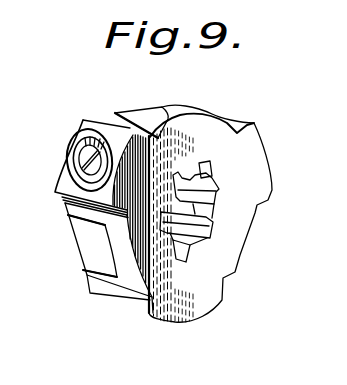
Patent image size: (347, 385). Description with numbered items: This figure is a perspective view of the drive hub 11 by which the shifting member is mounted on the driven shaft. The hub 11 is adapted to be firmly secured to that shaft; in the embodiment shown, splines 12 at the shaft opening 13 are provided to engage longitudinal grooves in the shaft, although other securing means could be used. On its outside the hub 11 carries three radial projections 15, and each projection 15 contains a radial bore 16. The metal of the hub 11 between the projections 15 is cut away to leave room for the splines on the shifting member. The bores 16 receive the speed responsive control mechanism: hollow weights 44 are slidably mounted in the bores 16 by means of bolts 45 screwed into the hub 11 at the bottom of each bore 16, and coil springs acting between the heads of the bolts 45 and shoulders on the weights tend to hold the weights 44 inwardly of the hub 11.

The drive hub 11 is at (212, 137).
The splines 12 is at (213, 222).
The shaft opening 13 is at (218, 195).
The radial projections 15 is at (67, 182).
The radial bore 16 is at (73, 165).
The hollow weights 44 is at (104, 139).
The bolts 45 is at (77, 152).